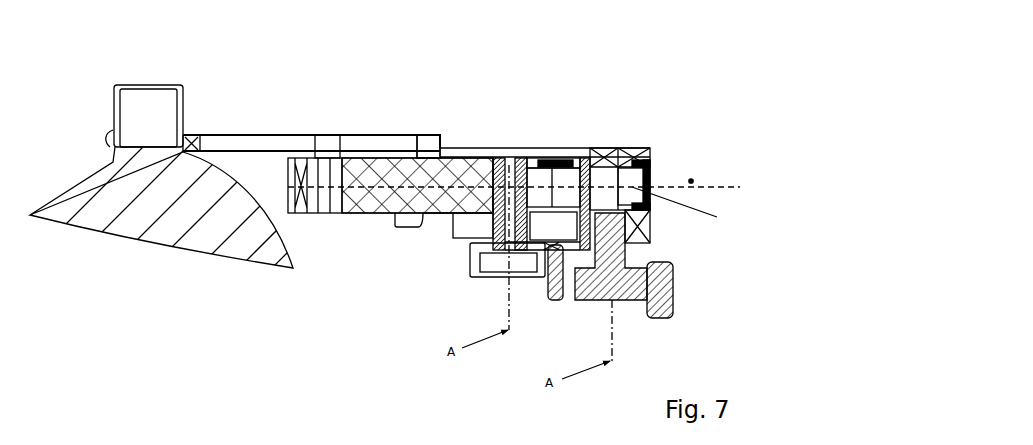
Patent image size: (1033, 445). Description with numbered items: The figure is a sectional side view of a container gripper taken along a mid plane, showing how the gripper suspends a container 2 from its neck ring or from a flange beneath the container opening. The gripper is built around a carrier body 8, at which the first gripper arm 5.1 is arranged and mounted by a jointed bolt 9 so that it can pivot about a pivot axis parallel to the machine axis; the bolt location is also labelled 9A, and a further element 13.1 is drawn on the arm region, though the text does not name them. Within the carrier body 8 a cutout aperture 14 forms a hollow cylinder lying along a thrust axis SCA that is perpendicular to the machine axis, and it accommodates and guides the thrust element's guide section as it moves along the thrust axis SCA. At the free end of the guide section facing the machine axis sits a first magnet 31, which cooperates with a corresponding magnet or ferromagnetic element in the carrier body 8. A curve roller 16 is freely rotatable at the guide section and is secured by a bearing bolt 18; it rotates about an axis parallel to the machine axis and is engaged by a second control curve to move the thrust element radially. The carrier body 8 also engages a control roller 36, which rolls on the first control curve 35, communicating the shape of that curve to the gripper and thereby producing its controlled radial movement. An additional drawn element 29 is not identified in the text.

The container 2 is at (123, 233).
The first gripper arm 5.1 is at (237, 135).
The retaining clip 13.1 is at (323, 133).
The jointed bolt 9 is at (413, 133).
The fastening element tab 9A is at (428, 146).
The carrier body 8 is at (470, 152).
The bearing bolt 18 is at (538, 158).
The first magnet 31 is at (562, 158).
The cutout aperture 14 is at (452, 214).
The curve roller 16 is at (510, 270).
The spacer element 29 is at (553, 301).
The control roller 36 is at (605, 301).
The first control curve 35 is at (675, 273).
The thrust axis SCA is at (691, 181).